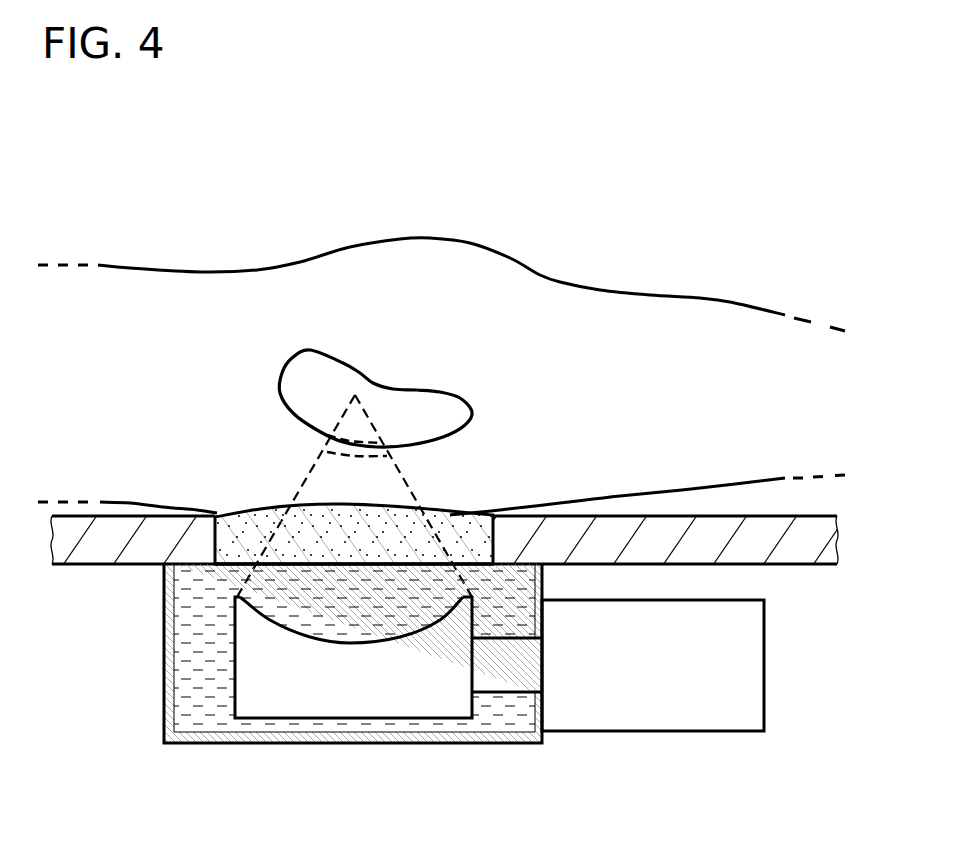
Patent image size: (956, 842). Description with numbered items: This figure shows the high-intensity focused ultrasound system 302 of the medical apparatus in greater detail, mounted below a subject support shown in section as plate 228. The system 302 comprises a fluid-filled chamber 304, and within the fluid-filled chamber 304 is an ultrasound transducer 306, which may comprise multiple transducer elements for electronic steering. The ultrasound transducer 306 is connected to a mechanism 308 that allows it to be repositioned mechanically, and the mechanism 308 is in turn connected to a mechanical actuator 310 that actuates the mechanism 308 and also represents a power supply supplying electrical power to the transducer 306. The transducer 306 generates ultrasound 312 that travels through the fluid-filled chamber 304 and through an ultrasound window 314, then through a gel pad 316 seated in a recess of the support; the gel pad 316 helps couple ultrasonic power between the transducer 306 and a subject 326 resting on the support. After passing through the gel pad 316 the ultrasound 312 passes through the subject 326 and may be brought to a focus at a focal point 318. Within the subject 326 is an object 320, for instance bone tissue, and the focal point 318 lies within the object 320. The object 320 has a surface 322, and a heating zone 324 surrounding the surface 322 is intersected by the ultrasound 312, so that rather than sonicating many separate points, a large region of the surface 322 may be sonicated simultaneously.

The housing wall / plate 228 is at (85, 555).
The high-intensity focused ultrasound system 302 is at (158, 660).
The fluid-filled chamber 304 is at (195, 707).
The ultrasound transducer 306 is at (338, 703).
The mechanism 308 is at (493, 673).
The mechanical actuator 310 is at (650, 712).
The ultrasound 312 is at (292, 494).
The ultrasound window 314 is at (297, 565).
The gel pad 316 is at (395, 550).
The focal point 318 is at (355, 393).
The object 320 is at (295, 372).
The surface 322 is at (372, 453).
The heating zone 324 is at (345, 455).
The subject 326 is at (730, 302).